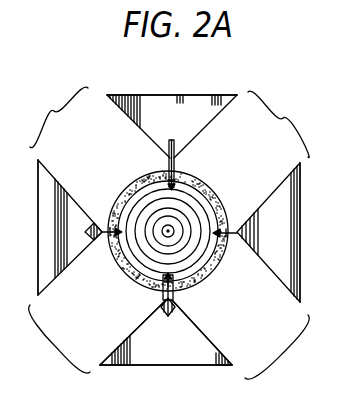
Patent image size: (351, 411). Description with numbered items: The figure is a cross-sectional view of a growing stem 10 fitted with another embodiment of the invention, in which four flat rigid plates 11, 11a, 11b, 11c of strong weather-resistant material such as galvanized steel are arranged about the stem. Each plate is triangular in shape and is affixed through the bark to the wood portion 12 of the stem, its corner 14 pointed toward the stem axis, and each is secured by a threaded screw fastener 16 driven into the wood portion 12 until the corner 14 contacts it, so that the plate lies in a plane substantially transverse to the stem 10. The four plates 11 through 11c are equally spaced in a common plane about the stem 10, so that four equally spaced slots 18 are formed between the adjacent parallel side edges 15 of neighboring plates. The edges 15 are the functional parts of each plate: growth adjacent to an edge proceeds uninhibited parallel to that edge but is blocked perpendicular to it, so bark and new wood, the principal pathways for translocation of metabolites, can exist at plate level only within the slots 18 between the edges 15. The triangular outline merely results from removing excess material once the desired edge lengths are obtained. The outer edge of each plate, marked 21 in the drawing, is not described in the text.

The stem 10 is at (235, 178).
The flat rigid plate 11 is at (210, 96).
The plate 11a is at (303, 210).
The plate 11b is at (207, 368).
The plate 11c is at (76, 258).
The wood portion 12 is at (143, 197).
The corner 14 is at (110, 207).
The edges 15 is at (120, 338).
The threaded screw fastener 16 is at (228, 267).
The slots 18 is at (168, 231).
The blade outer edge 21 is at (157, 96).